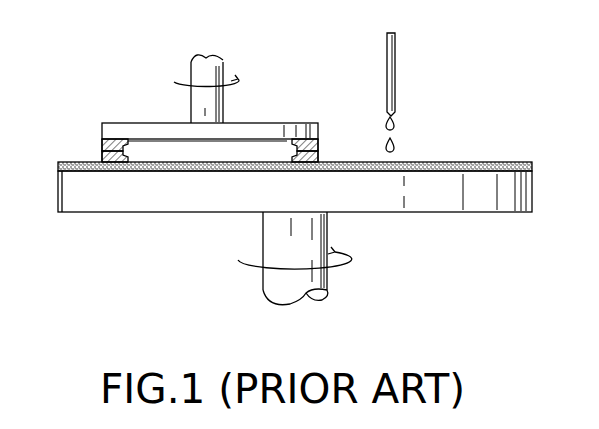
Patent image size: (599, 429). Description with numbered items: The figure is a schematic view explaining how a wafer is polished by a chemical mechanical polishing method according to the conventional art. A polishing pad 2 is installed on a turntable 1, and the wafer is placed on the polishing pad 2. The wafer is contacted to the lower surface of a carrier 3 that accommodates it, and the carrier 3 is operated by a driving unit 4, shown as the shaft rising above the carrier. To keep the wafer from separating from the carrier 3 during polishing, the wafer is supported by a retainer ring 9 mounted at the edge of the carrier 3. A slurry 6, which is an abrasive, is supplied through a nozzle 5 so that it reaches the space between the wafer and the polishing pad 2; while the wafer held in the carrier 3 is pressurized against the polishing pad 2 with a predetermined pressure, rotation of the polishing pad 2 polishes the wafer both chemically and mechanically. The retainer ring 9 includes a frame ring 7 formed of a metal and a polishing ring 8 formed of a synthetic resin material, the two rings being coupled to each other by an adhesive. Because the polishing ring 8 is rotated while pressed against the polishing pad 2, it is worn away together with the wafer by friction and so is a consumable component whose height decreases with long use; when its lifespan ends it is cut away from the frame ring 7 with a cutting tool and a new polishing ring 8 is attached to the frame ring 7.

The turntable 1 is at (533, 190).
The polishing pad 2 is at (507, 170).
The carrier 3 is at (277, 127).
The driving unit 4 is at (198, 63).
The nozzle 5 is at (396, 61).
The slurry 6 is at (396, 123).
The frame ring 7 is at (101, 147).
The polishing ring 8 is at (100, 160).
The retainer ring 9 is at (174, 130).